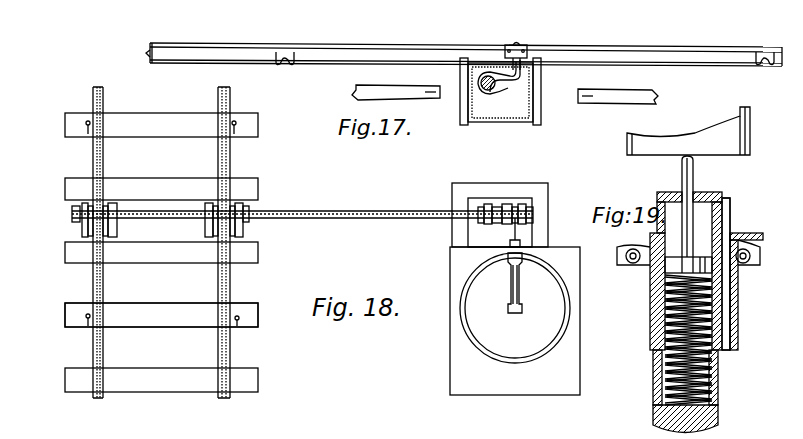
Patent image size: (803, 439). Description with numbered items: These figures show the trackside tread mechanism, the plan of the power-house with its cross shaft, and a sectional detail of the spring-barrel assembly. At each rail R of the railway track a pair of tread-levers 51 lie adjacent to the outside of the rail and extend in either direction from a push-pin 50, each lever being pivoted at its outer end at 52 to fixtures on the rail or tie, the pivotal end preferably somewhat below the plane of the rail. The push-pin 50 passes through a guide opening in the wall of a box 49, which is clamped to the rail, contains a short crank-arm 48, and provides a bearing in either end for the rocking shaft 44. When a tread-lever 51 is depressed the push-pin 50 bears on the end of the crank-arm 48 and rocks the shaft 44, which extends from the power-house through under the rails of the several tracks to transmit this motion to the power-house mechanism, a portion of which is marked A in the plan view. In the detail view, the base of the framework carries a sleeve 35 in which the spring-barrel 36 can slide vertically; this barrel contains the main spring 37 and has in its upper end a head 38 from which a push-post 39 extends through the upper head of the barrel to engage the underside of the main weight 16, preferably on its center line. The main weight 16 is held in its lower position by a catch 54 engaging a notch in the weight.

In FIG. 17, the rail R is at (227, 57).
In FIG. 18, the rail R is at (104, 97).
In FIG. 17, the tread-levers 51 is at (421, 47).
In FIG. 18, the tread-levers 51 is at (88, 160).
In FIG. 17, the pivot 52 is at (283, 63).
In FIG. 18, the pivot 52 is at (86, 123).
In FIG. 17, the push-pin 50 is at (518, 46).
In FIG. 17, the box 49 is at (477, 103).
In FIG. 18, the box 49 is at (110, 214).
In FIG. 17, the rocking shaft 44 is at (489, 91).
In FIG. 18, the rocking shaft 44 is at (362, 211).
In FIG. 17, the crank-arm 48 is at (505, 80).
In FIG. 18, the catch 54 is at (90, 283).
In FIG. 18, the indicator dial A is at (515, 289).
In FIG. 19, the main weight 16 is at (688, 131).
In FIG. 19, the push-post 39 is at (690, 178).
In FIG. 19, the sleeve 35 is at (652, 328).
In FIG. 19, the main spring 37 is at (727, 305).
In FIG. 19, the head 38 is at (668, 267).
In FIG. 19, the spring-barrel 36 is at (719, 379).